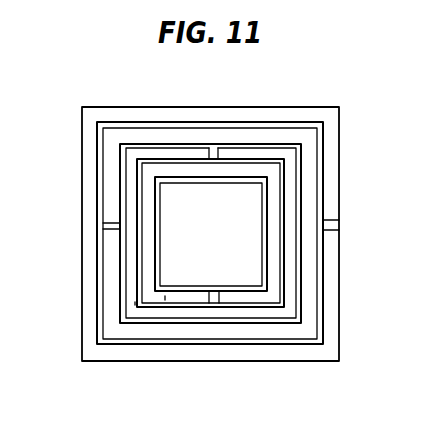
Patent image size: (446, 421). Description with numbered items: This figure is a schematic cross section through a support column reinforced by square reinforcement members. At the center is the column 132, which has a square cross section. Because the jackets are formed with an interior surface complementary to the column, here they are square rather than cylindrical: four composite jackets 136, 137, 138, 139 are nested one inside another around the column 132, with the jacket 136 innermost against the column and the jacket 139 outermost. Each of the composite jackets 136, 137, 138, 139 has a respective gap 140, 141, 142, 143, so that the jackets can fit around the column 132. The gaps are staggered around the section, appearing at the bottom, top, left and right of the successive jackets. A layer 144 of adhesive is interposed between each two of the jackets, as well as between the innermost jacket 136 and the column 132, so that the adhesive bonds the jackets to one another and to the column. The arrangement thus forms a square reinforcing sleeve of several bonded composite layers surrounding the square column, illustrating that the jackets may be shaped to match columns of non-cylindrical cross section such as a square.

The column 132 is at (245, 201).
The composite jacket 136 is at (275, 260).
The composite jacket 137 is at (292, 280).
The composite jacket 138 is at (313, 307).
The composite jacket 139 is at (333, 336).
The gap 140 is at (214, 295).
The gap 141 is at (213, 150).
The gap 142 is at (110, 226).
The gap 143 is at (338, 226).
The layer of adhesive 144 is at (165, 296).